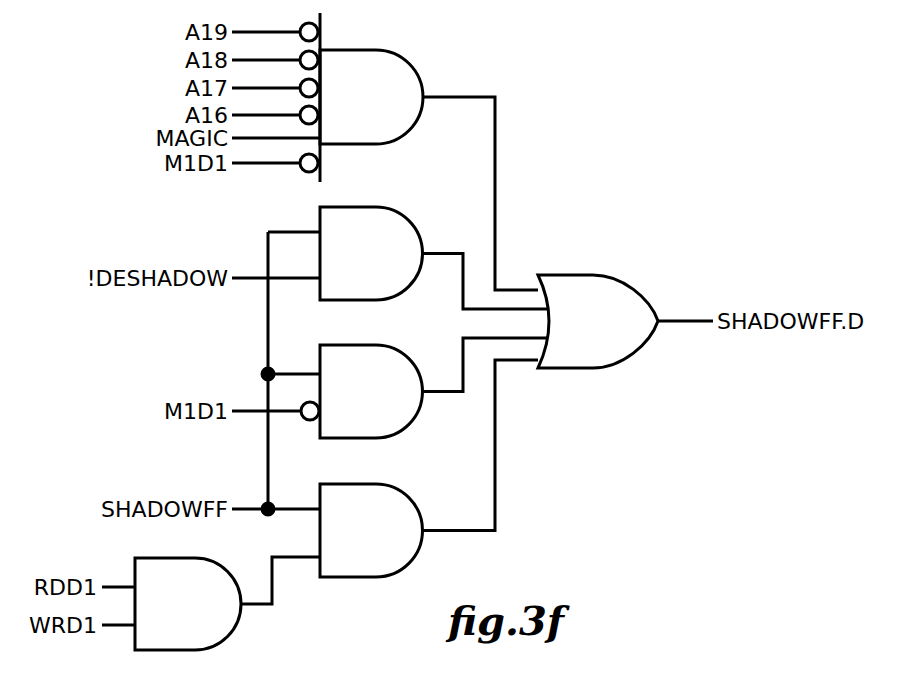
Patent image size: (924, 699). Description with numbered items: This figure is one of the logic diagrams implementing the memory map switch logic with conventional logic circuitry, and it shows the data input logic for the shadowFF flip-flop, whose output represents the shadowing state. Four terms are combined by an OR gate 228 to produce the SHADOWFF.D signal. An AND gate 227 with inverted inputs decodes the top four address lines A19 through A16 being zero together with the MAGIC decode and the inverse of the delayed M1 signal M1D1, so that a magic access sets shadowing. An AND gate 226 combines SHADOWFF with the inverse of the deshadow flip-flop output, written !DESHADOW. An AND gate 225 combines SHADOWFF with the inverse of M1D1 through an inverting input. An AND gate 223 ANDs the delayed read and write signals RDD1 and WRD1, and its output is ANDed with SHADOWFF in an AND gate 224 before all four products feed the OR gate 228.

The AND gate 223 is at (192, 591).
The AND gate 224 is at (377, 521).
The AND gate with inverted input 225 is at (370, 383).
The AND gate 226 is at (370, 244).
The AND gate with inverted inputs 227 is at (375, 85).
The OR gate 228 is at (602, 307).